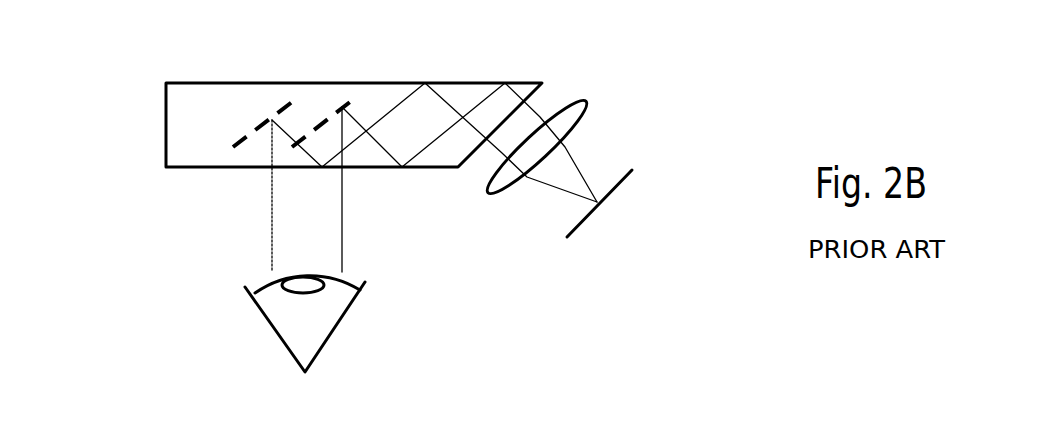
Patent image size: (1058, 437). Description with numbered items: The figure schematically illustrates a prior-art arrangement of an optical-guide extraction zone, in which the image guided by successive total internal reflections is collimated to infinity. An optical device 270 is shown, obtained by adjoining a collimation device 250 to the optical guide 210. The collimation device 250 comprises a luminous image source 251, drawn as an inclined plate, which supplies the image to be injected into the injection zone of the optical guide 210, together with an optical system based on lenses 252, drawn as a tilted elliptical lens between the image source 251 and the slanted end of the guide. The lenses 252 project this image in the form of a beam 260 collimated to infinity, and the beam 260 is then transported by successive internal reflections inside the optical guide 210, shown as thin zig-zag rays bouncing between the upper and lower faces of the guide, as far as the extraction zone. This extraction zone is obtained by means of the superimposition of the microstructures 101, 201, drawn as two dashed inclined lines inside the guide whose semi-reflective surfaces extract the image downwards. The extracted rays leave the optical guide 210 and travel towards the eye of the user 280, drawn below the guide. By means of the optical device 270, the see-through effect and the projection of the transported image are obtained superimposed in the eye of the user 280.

The microstructure 101 is at (264, 112).
The microstructure 201 is at (291, 124).
The optical guide 210 is at (147, 128).
The beam 260 is at (483, 100).
The collimation device 250 is at (630, 128).
The lenses 252 is at (587, 100).
The luminous image source 251 is at (632, 170).
The optical device 270 is at (788, 43).
The eye of the user 280 is at (318, 325).